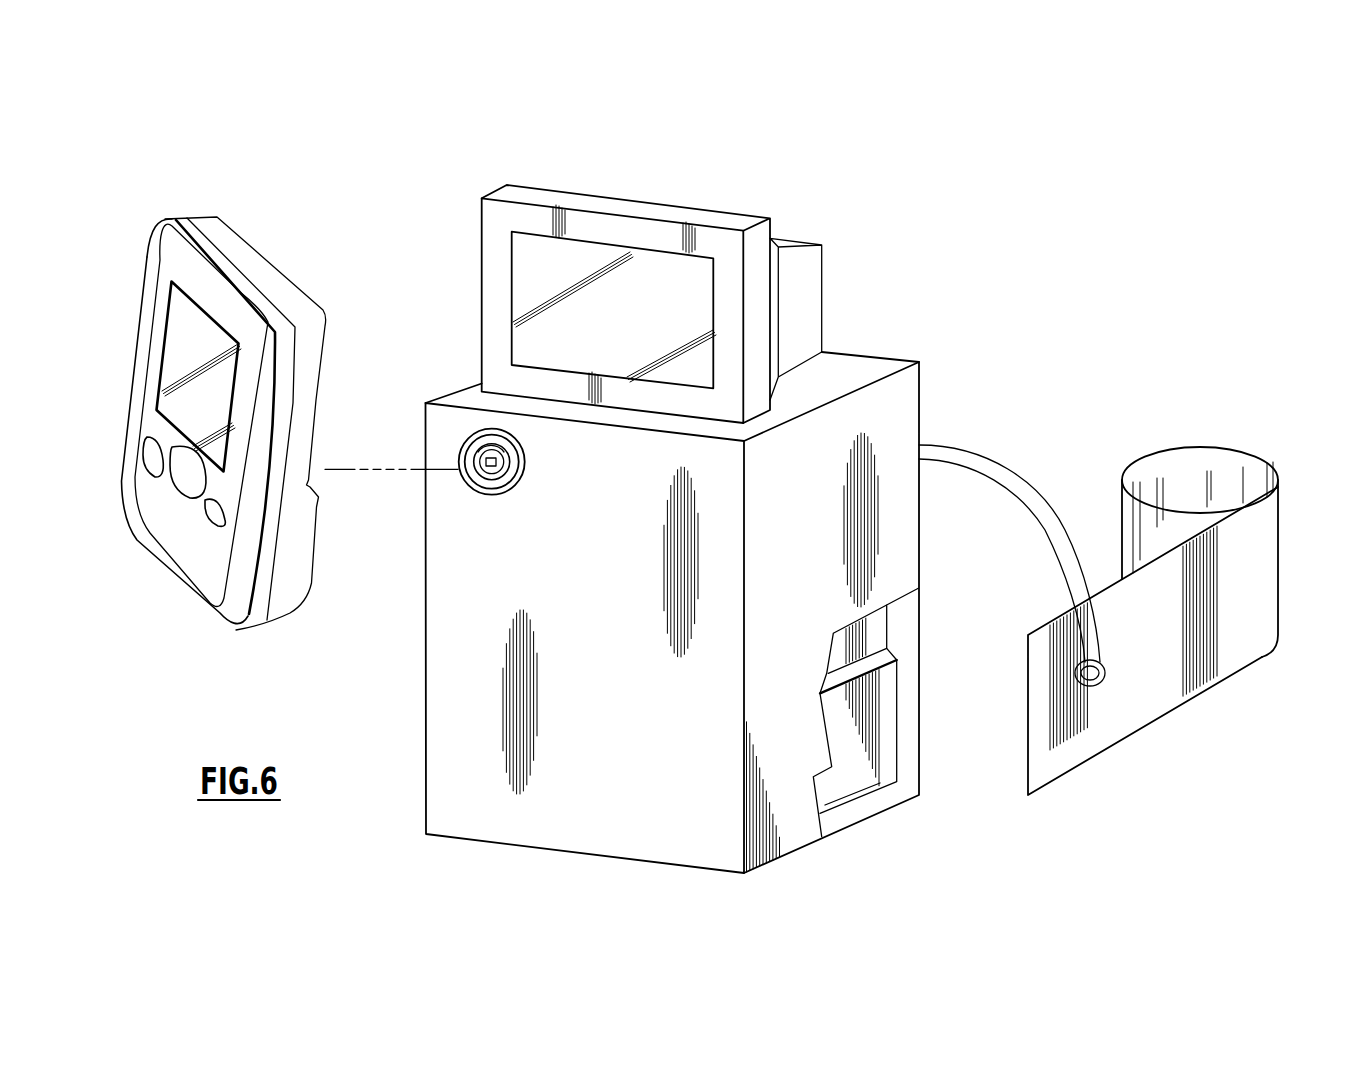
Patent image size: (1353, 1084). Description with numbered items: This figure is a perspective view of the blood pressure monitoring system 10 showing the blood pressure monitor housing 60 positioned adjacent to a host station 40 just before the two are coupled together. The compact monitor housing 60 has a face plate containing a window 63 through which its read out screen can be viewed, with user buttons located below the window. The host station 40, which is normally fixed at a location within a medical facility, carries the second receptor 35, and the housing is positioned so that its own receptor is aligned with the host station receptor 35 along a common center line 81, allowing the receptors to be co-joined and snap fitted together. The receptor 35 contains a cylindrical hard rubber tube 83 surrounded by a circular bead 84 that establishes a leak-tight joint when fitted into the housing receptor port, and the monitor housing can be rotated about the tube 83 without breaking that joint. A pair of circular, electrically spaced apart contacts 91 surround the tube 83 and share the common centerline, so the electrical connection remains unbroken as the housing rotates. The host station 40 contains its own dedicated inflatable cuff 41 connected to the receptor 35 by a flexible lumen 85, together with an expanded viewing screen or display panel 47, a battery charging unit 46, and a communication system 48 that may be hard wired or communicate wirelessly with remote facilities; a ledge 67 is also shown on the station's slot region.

The system 10 is at (269, 241).
The blood pressure monitor housing 60 is at (333, 360).
The common center line 81 is at (390, 471).
The host station 40 is at (421, 693).
The circular bead 84 is at (491, 443).
The circular electrically spaced apart contacts 91 is at (517, 442).
The cylindrical hard rubber tube 83 is at (474, 477).
The second receptor 35 is at (483, 497).
The battery charging unit 46 is at (877, 630).
The communication system 48 is at (877, 723).
The slot ledge 67 is at (863, 772).
The display panel 47 is at (720, 217).
The flexible lumen 85 is at (995, 447).
The inflatable cuff 41 is at (1283, 548).
The window 63 is at (1178, 695).